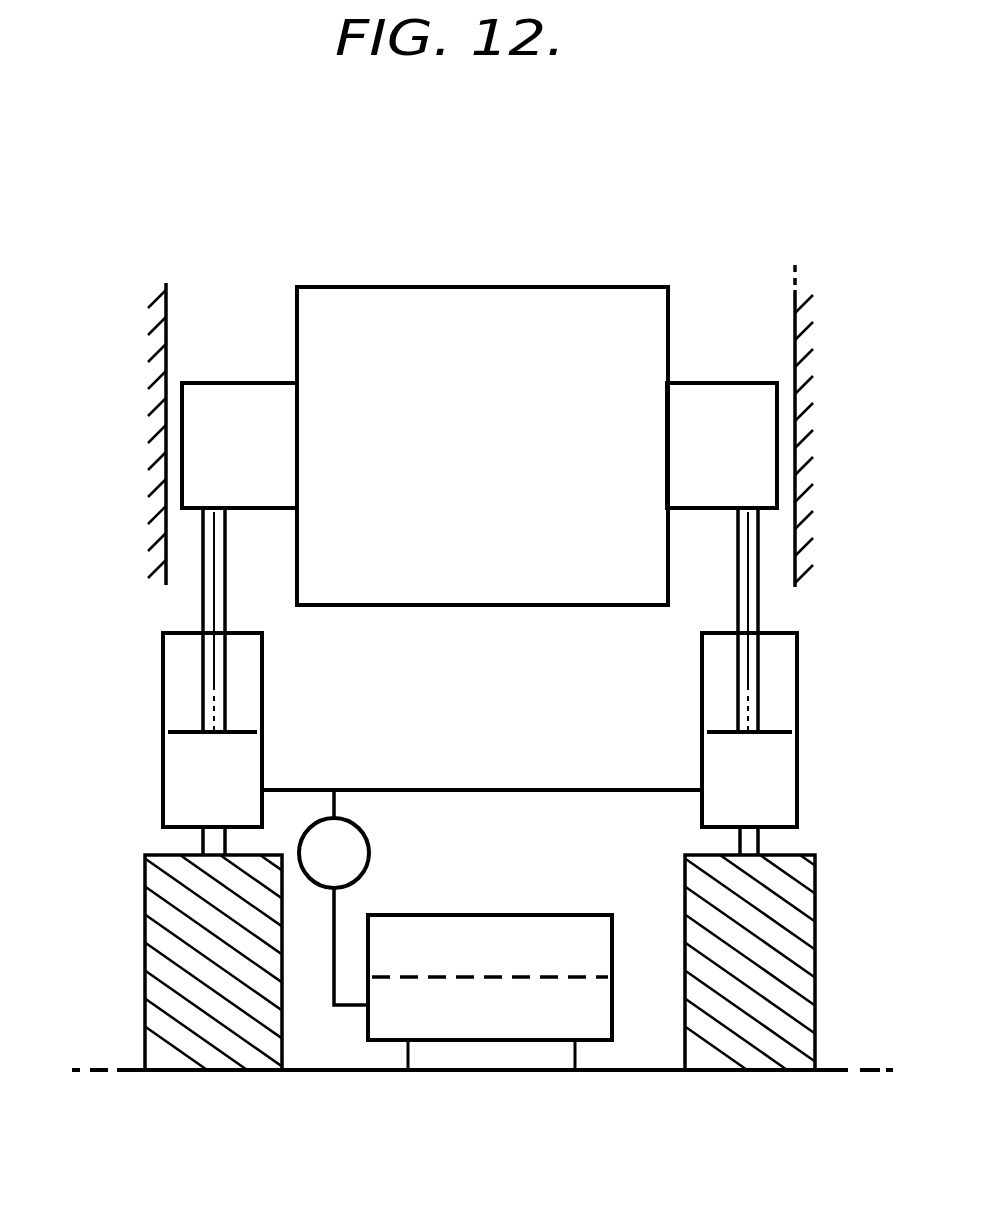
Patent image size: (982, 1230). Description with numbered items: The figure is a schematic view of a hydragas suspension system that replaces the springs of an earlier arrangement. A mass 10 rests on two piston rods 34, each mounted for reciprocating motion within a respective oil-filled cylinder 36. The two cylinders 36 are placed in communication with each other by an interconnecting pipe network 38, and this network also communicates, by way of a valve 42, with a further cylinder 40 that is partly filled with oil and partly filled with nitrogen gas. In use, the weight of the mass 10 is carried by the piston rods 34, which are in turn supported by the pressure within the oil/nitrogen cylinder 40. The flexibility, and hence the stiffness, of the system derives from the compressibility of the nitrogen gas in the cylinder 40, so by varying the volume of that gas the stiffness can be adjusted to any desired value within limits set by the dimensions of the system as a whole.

The mass 10 is at (445, 318).
The piston rods 34 is at (203, 595).
The oil-filled cylinders 36 is at (163, 750).
The interconnecting pipe network 38 is at (548, 790).
The oil/nitrogen cylinder 40 is at (453, 912).
The valve 42 is at (369, 843).